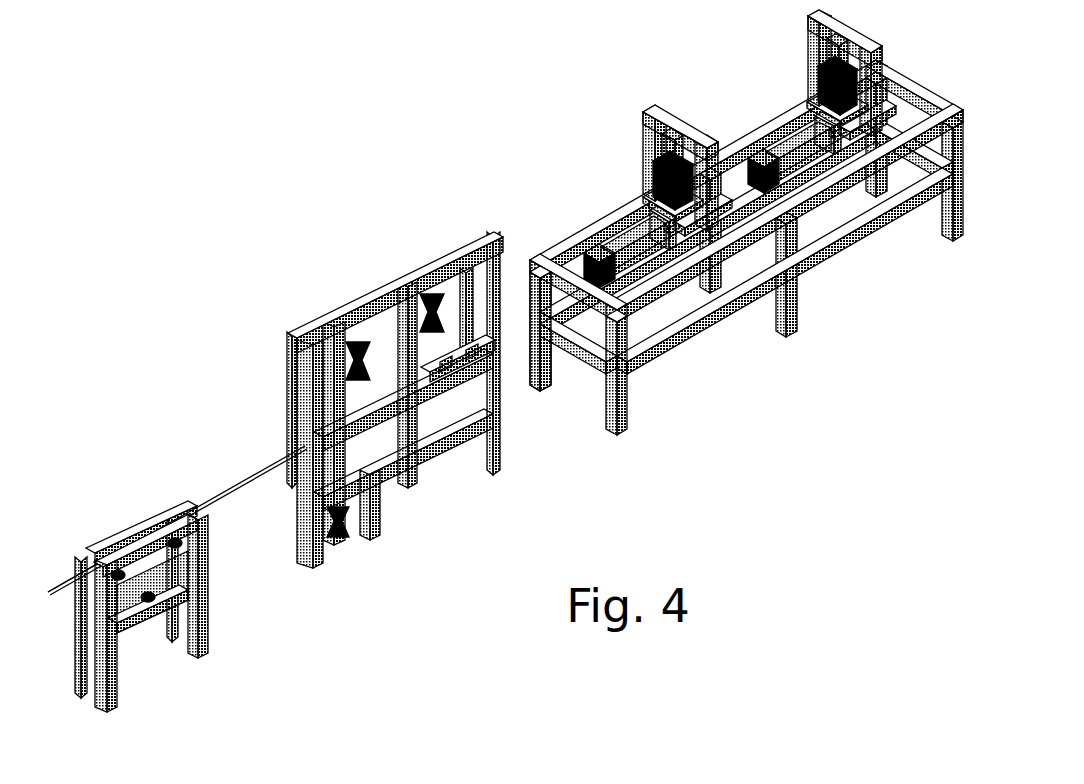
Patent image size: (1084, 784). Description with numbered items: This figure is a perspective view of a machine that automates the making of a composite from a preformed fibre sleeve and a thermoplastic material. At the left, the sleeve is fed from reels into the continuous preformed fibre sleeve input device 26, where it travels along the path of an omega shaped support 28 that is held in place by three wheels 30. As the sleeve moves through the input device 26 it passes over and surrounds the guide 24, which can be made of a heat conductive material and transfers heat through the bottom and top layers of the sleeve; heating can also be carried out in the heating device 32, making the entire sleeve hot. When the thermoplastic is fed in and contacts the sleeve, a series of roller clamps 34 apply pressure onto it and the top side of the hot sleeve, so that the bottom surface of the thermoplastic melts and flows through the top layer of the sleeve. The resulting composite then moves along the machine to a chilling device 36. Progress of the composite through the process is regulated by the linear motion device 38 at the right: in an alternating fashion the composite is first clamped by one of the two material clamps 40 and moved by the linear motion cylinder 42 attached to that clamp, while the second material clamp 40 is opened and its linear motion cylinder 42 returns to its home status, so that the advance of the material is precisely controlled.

The guide 24 is at (268, 462).
The continuous preformed fibre sleeve input device 26 is at (191, 613).
The omega shaped support 28 is at (64, 585).
The wheels 30 is at (152, 600).
The heating device 32 is at (429, 400).
The roller clamps 34 is at (382, 390).
The chilling device 36 is at (457, 365).
The linear motion device 38 is at (746, 236).
The material clamps 40 is at (818, 92).
The linear motion cylinders 42 is at (617, 270).